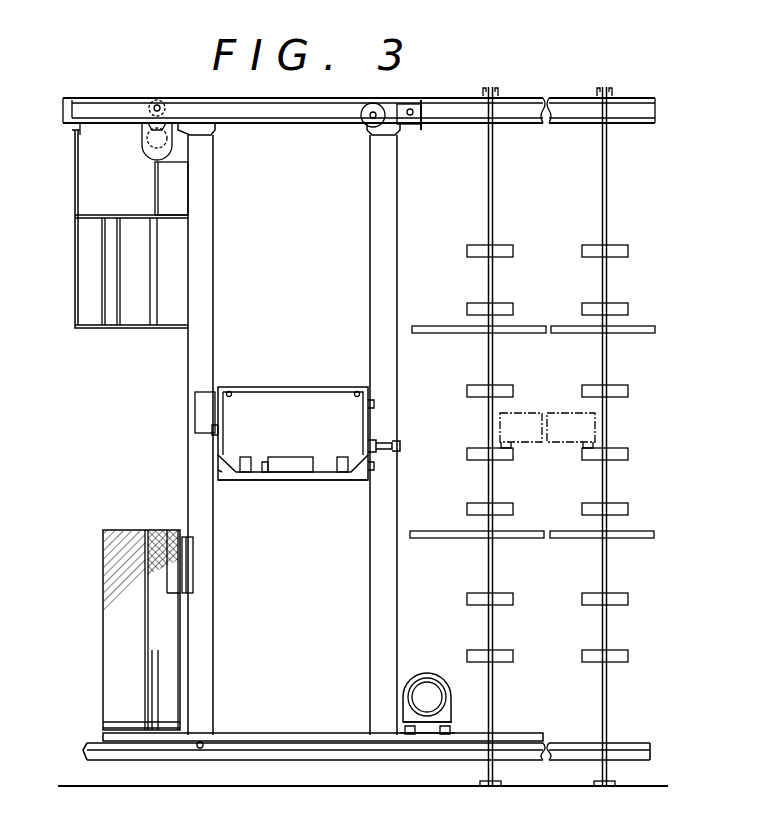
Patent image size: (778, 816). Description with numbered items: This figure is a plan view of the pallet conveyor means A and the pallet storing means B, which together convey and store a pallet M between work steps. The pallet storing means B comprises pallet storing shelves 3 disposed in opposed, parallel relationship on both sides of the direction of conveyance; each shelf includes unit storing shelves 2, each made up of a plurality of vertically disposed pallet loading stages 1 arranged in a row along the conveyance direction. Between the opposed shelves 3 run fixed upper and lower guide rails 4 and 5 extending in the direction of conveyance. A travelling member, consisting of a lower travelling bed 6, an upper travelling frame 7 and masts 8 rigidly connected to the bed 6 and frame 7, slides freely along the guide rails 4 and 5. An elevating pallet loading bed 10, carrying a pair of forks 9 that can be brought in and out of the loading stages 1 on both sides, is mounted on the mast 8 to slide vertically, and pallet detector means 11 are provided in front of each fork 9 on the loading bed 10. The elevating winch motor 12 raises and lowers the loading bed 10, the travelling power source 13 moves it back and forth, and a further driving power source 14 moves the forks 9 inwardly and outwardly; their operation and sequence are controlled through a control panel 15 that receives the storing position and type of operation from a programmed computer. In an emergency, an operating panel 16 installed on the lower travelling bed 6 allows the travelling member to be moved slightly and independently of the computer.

The pallet loading stage 1 is at (504, 252).
The unit storing shelf 2 is at (533, 250).
The pallet storing shelf 3 is at (602, 187).
The upper guide rail 4 is at (451, 113).
The lower guide rail 5 is at (570, 743).
The lower travelling bed 6 is at (323, 733).
The upper travelling frame 7 is at (325, 113).
The mast 8 is at (211, 198).
The fork 9 is at (296, 457).
The elevating pallet loading bed 10 is at (273, 482).
The pallet detector means 11 is at (246, 457).
The elevating winch motor 12 is at (434, 678).
The travelling power source 13 is at (144, 147).
The driving power source 14 is at (397, 441).
The control panel 15 is at (159, 190).
The operating panel 16 is at (172, 653).
The pallet conveyor means A is at (296, 378).
The pallet storing means B is at (608, 225).
The pallet M is at (558, 440).